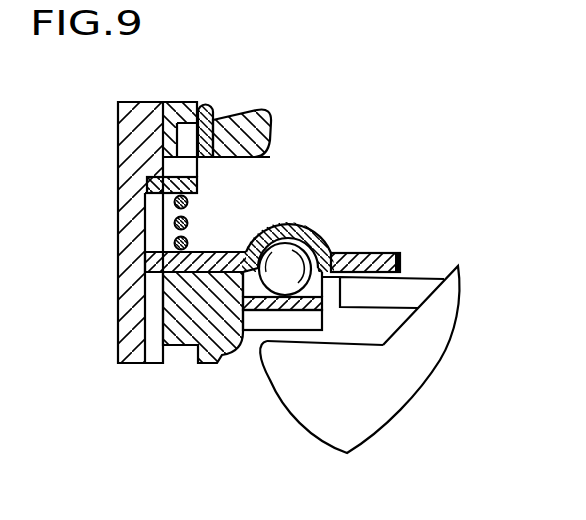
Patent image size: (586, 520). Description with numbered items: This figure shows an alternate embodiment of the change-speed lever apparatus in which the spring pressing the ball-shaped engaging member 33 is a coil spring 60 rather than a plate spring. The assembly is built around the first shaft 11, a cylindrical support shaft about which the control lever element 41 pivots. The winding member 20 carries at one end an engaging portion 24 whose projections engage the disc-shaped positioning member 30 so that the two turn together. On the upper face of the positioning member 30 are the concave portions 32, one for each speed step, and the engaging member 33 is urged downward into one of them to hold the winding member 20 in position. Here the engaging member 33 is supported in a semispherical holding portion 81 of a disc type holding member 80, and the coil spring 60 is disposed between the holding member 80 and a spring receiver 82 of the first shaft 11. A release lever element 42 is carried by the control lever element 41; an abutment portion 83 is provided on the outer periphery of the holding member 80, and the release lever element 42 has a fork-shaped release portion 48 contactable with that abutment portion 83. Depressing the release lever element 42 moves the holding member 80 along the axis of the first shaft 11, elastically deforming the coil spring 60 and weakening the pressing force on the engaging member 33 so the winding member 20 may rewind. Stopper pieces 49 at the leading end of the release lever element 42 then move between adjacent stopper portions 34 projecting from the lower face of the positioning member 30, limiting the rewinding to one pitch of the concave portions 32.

The first shaft 11 is at (118, 209).
The winding member 20 is at (194, 345).
The engaging portion 24 is at (230, 294).
The positioning member 30 is at (223, 305).
The concave portions 32 is at (360, 252).
The engaging member 33 is at (323, 217).
The stopper portions 34 is at (258, 323).
The control lever element 41 is at (242, 117).
The release lever element 42 is at (400, 381).
The release portion 48 is at (358, 300).
The stopper pieces 49 is at (278, 358).
The coil spring 60 is at (190, 221).
The holding member 80 is at (216, 226).
The semispherical holding portion 81 is at (275, 252).
The spring receiver 82 is at (147, 178).
The abutment portion 83 is at (392, 253).